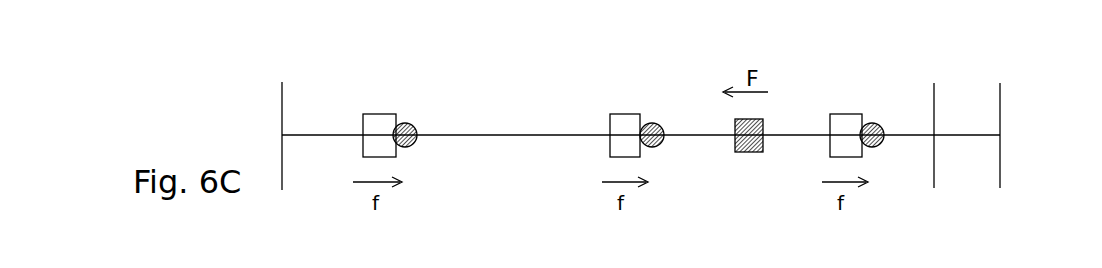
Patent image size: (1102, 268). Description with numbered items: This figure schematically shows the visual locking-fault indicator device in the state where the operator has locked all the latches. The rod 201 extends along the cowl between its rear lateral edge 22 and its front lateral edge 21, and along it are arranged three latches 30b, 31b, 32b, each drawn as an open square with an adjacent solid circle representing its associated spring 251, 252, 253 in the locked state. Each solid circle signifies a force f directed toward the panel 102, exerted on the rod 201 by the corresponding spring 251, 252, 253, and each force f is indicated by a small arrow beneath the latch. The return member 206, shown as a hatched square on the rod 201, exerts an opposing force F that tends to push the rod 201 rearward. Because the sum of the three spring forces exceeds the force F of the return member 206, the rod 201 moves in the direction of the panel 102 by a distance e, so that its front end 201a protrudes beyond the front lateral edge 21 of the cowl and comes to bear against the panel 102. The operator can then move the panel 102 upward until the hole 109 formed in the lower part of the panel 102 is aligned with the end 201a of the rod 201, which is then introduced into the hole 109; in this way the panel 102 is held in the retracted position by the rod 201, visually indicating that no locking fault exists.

The rear lateral edge 22 is at (282, 88).
The front lateral edge 21 is at (937, 84).
The panel 102 is at (1002, 84).
The hole 109 is at (1002, 135).
The rod 201 is at (487, 135).
The front end of the rod 201a is at (1003, 135).
The return member 206 is at (741, 155).
The latch 30b is at (843, 112).
The latch 31b is at (625, 113).
The latch 32b is at (372, 112).
The spring 251 is at (880, 122).
The spring 252 is at (652, 123).
The spring 253 is at (413, 123).